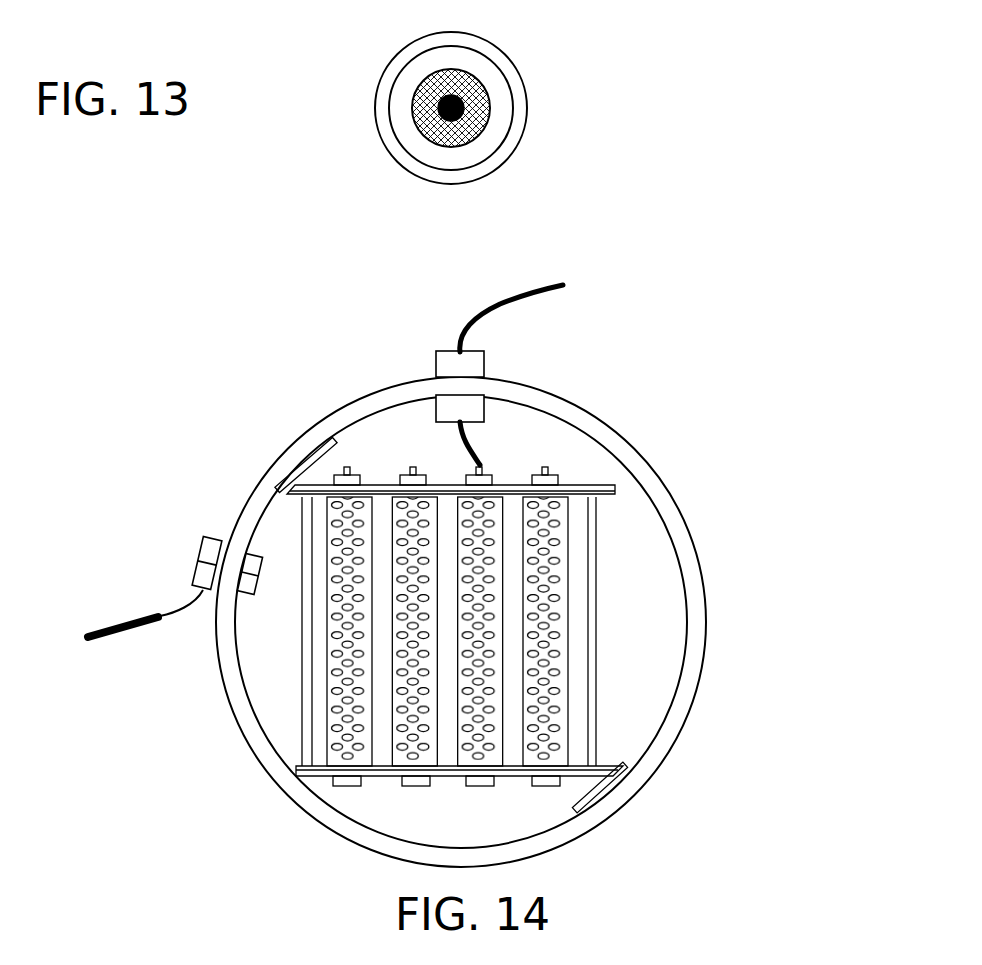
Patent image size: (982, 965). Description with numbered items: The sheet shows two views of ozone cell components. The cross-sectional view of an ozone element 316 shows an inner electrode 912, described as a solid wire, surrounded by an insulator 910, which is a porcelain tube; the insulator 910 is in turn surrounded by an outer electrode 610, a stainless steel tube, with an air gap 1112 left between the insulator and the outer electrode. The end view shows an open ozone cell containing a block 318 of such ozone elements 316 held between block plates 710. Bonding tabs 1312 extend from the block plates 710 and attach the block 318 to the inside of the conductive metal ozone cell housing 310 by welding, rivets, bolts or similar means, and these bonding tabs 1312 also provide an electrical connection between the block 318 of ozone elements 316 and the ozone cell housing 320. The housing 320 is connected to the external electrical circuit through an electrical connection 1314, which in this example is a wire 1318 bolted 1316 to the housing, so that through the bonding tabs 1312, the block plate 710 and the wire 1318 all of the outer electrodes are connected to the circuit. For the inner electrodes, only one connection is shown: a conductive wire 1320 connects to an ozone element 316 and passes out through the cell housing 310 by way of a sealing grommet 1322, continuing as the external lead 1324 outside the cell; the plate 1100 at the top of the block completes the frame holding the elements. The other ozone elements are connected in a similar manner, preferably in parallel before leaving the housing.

In FIG. 13, the outer electrode 610 is at (392, 64).
In FIG. 13, the air gap 1112 is at (483, 73).
In FIG. 13, the inner electrode 912 is at (463, 107).
In FIG. 13, the insulator 910 is at (480, 128).
In FIG. 14, the ozone cell housing 310 is at (316, 395).
In FIG. 14, the ozone cell housing 320 is at (395, 386).
In FIG. 14, the sealing grommet 1322 is at (437, 350).
In FIG. 14, the external cable 1324 is at (527, 301).
In FIG. 14, the conductive wire 1320 is at (467, 442).
In FIG. 14, the top plate 1100 is at (582, 484).
In FIG. 14, the block 318 is at (276, 513).
In FIG. 14, the electrical connection 1314 is at (200, 543).
In FIG. 14, the wire 1318 is at (133, 621).
In FIG. 14, the bolt connection 1316 is at (245, 597).
In FIG. 14, the ozone element 316 is at (567, 580).
In FIG. 14, the block plate 710 is at (623, 762).
In FIG. 14, the bonding tabs 1312 is at (603, 795).